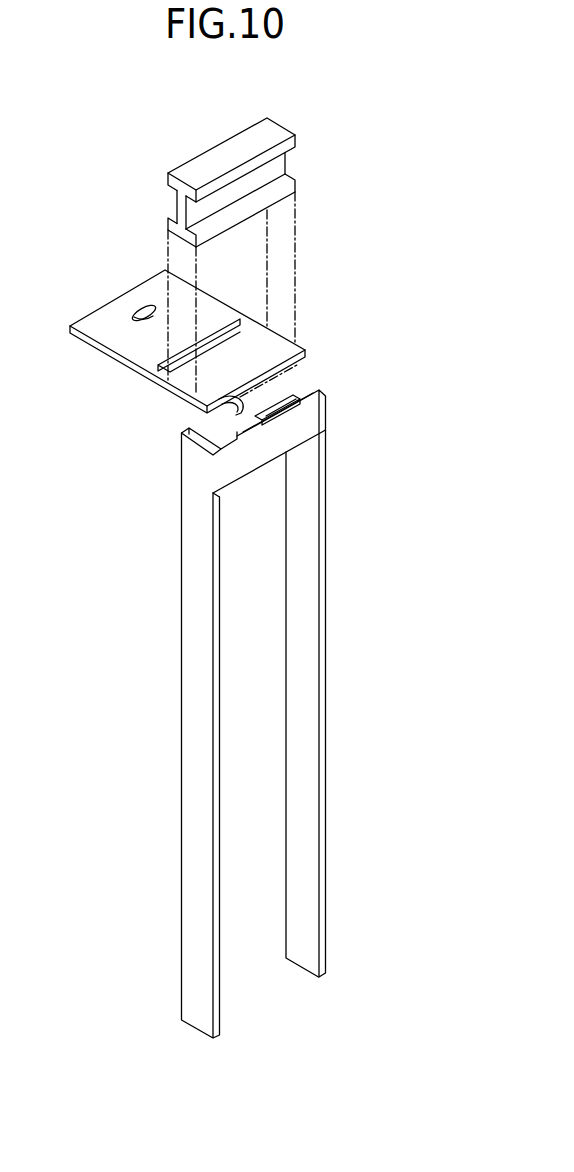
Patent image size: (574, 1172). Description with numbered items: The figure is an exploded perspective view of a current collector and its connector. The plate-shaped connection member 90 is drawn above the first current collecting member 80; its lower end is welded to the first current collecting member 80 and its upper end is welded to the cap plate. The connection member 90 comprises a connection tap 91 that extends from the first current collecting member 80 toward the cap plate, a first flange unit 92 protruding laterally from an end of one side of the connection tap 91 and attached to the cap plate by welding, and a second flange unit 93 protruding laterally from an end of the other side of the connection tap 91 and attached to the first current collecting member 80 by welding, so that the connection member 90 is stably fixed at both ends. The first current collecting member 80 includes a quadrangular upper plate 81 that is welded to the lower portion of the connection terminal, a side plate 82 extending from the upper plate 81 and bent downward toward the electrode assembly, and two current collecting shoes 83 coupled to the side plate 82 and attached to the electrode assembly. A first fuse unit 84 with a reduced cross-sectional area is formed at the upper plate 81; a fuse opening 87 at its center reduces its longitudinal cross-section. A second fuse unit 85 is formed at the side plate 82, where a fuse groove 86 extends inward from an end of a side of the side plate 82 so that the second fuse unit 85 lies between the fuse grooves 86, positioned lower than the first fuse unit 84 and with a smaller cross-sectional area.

The first current collecting member 80 is at (233, 646).
The upper plate 81 is at (177, 357).
The side plate 82 is at (264, 671).
The current collecting shoes 83 is at (200, 682).
The first fuse unit 84 is at (157, 366).
The second fuse unit 85 is at (268, 418).
The fuse groove 86 is at (233, 422).
The fuse opening 87 is at (196, 382).
The connection member 90 is at (261, 231).
The connection tap 91 is at (275, 169).
The first flange unit 92 is at (217, 167).
The second flange unit 93 is at (242, 221).